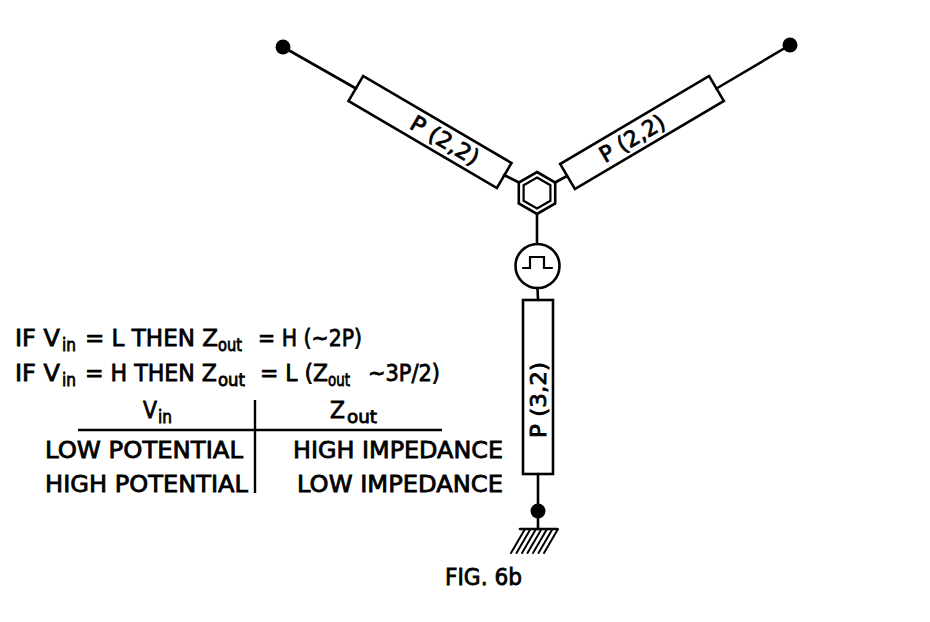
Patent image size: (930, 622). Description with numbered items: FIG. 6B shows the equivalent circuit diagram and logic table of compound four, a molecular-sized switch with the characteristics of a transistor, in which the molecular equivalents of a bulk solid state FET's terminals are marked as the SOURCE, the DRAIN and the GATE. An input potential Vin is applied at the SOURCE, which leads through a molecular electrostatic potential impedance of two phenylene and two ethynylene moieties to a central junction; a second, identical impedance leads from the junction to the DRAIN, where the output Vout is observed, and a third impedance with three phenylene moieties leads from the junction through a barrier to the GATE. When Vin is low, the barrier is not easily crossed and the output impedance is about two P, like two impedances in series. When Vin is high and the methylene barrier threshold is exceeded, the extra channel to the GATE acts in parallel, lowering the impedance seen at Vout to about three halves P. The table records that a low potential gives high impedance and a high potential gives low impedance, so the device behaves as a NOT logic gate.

The source terminal SOURCE is at (275, 33).
The drain terminal DRAIN is at (795, 32).
The gate terminal GATE is at (567, 513).
The input potential Vin is at (315, 68).
The output potential Vout is at (772, 67).